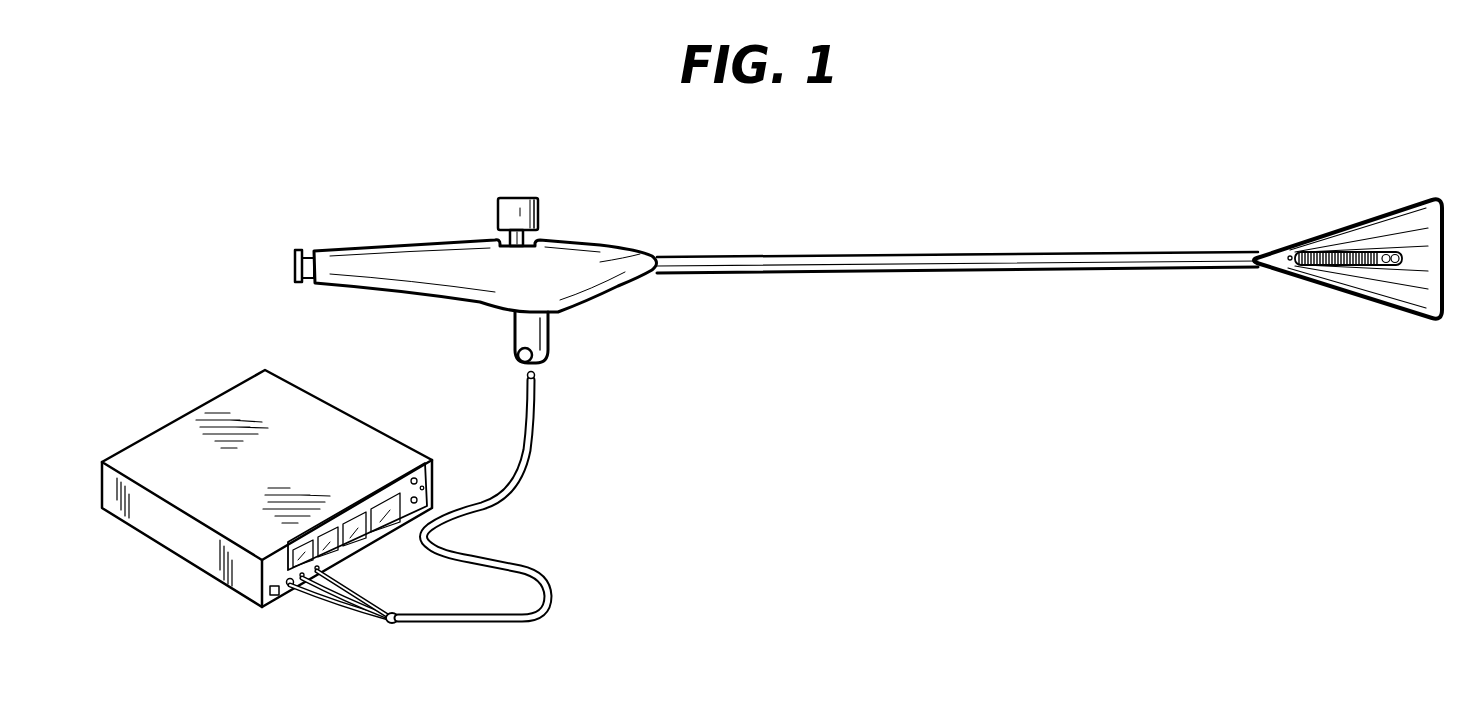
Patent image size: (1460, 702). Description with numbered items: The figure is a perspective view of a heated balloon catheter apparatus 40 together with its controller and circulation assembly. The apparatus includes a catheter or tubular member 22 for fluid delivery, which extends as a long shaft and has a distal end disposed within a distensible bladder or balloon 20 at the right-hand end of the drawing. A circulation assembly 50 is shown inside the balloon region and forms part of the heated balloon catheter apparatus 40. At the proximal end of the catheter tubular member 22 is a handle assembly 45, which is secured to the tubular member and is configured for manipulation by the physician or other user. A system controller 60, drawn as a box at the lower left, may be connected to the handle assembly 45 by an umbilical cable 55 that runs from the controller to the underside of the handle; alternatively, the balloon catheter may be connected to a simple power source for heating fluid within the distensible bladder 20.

The handle assembly 45 is at (379, 212).
The catheter tubular member 22 is at (710, 255).
The heated balloon catheter apparatus 40 is at (985, 206).
The distensible bladder 20 is at (1320, 228).
The circulation assembly 50 is at (1384, 266).
The system controller 60 is at (182, 452).
The umbilical cable 55 is at (546, 576).